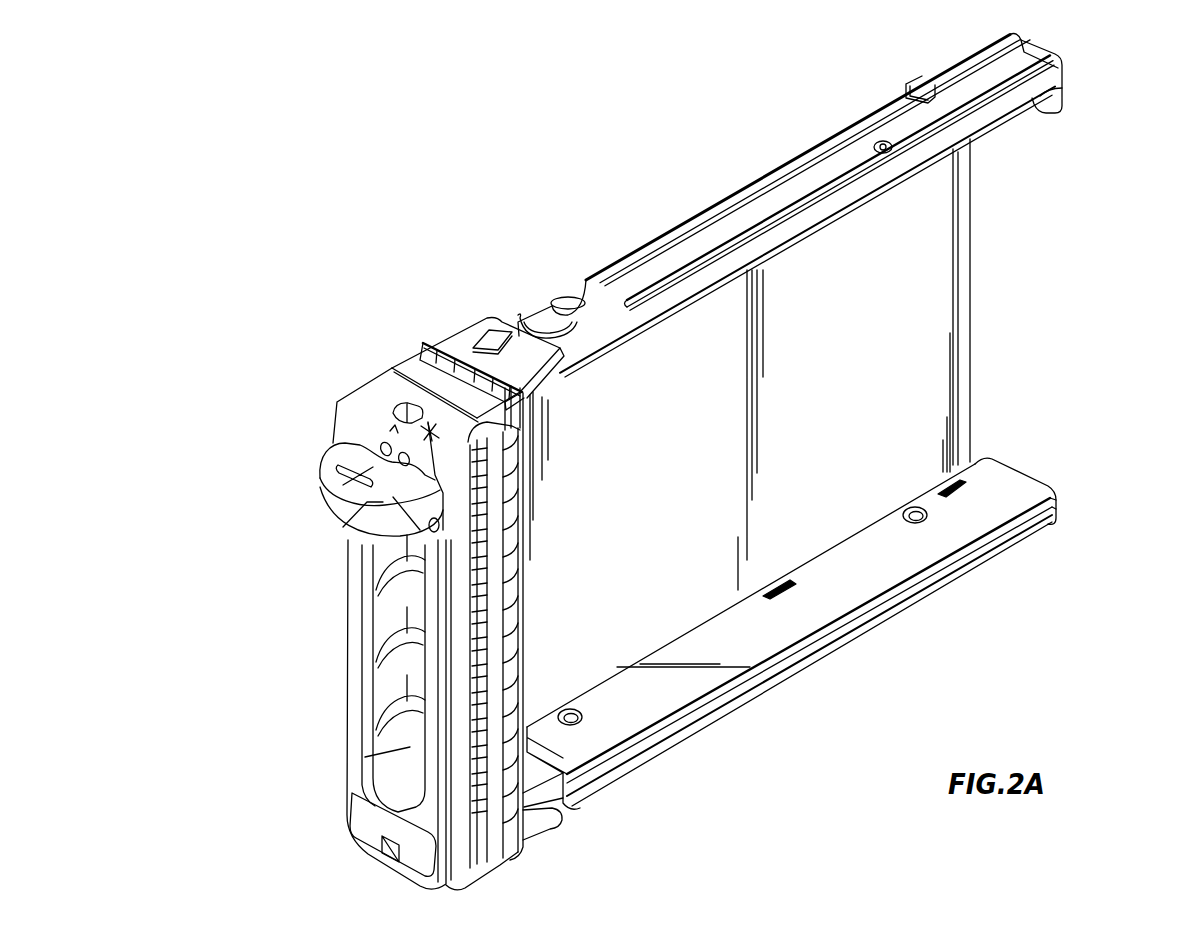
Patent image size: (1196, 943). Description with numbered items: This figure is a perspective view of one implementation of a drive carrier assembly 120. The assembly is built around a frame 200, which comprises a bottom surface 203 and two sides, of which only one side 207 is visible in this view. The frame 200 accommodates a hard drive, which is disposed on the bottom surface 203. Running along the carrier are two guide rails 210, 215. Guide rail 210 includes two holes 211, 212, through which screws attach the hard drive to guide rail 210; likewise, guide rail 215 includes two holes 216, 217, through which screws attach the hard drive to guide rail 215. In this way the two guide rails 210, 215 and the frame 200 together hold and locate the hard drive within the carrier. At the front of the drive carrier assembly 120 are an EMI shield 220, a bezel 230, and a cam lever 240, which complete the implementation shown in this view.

The drive carrier assembly 120 is at (326, 196).
The frame 200 is at (996, 296).
The bottom surface 203 is at (905, 385).
The side 207 is at (862, 582).
The guide rail 210 is at (737, 220).
The hole 211 is at (913, 92).
The hole 212 is at (568, 300).
The guide rail 215 is at (1018, 472).
The hole 216 is at (925, 517).
The hole 217 is at (583, 718).
The EMI shield 220 is at (433, 343).
The bezel 230 is at (382, 406).
The cam lever 240 is at (372, 677).